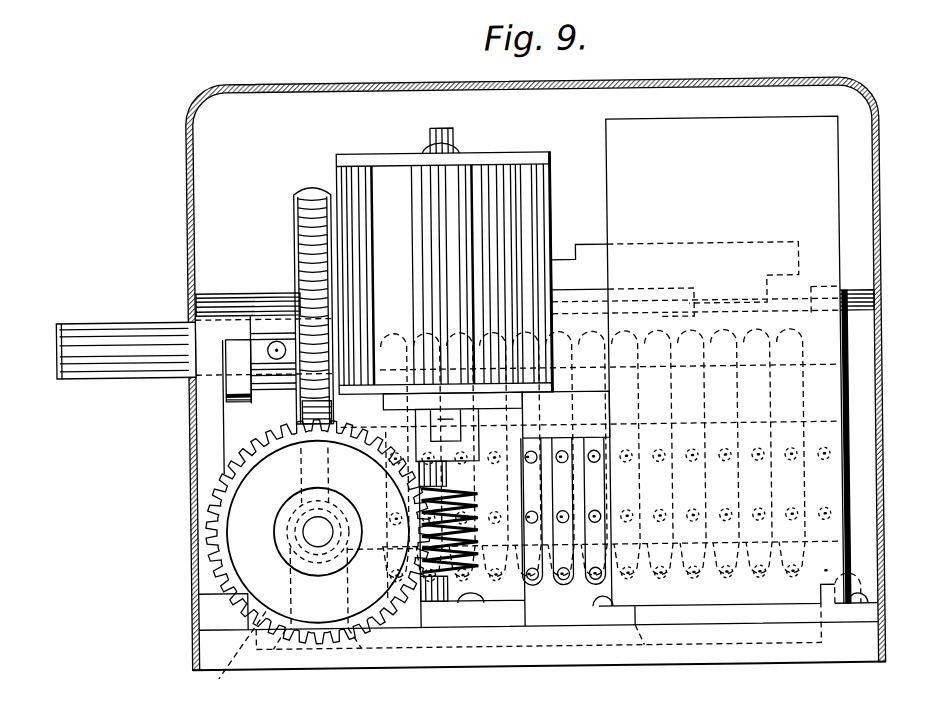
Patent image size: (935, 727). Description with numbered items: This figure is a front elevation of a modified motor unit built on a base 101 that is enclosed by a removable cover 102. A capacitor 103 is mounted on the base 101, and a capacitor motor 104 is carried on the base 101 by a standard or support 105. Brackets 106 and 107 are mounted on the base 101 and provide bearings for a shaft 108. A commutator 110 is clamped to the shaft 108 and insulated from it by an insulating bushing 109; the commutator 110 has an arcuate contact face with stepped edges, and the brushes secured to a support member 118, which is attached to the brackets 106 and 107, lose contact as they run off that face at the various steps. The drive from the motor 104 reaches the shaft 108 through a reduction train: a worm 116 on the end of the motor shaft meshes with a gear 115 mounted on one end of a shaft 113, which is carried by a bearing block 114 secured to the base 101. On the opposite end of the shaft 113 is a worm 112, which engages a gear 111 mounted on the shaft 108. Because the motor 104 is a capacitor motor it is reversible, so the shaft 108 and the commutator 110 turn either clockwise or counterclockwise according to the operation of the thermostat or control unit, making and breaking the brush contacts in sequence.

The base 101 is at (530, 657).
The removable cover 102 is at (673, 81).
The capacitor 103 is at (832, 209).
The capacitor motor 104 is at (552, 229).
The standard or support 105 is at (515, 590).
The bracket 106 is at (211, 414).
The bracket 107 is at (867, 423).
The shaft 108 is at (64, 350).
The insulating bushing 109 is at (261, 308).
The commutator 110 is at (590, 411).
The gear 111 is at (301, 410).
The worm 112 is at (281, 539).
The shaft 113 is at (320, 537).
The bearing block 114 is at (283, 655).
The gear 115 is at (372, 628).
The worm 116 is at (478, 508).
The support member 118 is at (835, 581).